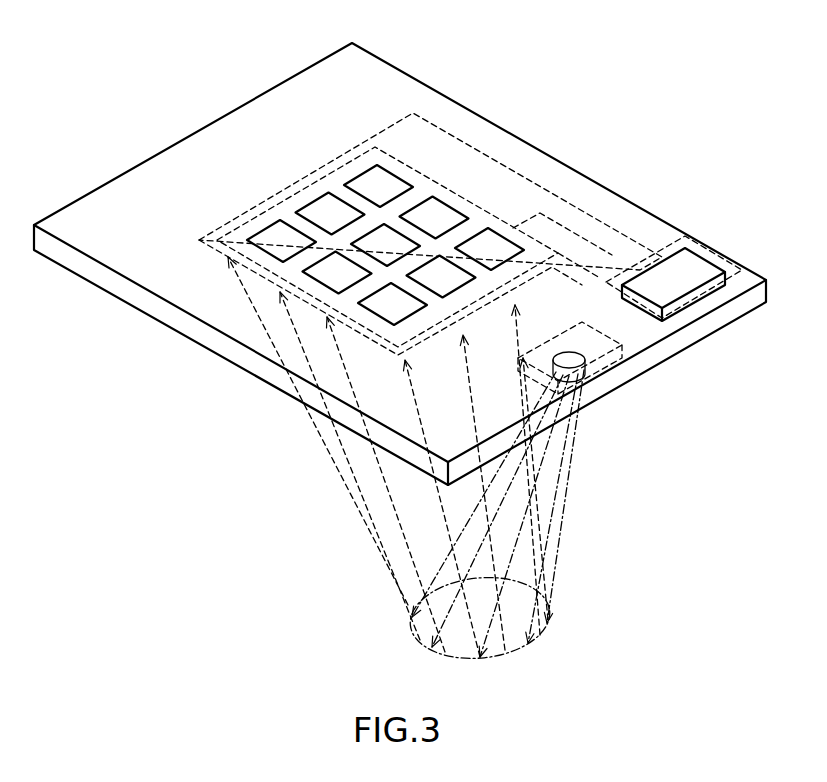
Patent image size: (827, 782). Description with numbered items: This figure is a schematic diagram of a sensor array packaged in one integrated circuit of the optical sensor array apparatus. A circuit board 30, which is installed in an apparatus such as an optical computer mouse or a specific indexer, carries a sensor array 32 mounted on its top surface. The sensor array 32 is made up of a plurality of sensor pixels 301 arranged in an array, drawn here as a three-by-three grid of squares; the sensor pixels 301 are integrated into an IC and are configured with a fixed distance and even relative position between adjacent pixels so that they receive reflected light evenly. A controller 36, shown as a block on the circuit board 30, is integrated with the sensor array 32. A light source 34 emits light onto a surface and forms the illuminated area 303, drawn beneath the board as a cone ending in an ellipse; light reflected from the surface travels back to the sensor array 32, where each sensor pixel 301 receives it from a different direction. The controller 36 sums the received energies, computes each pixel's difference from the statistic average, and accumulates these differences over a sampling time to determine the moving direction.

The circuit board 30 is at (274, 86).
The sensor array 32 is at (294, 192).
The sensor pixels 301 is at (443, 218).
The controller 36 is at (697, 266).
The light source 34 is at (593, 370).
The illuminated area 303 is at (548, 627).